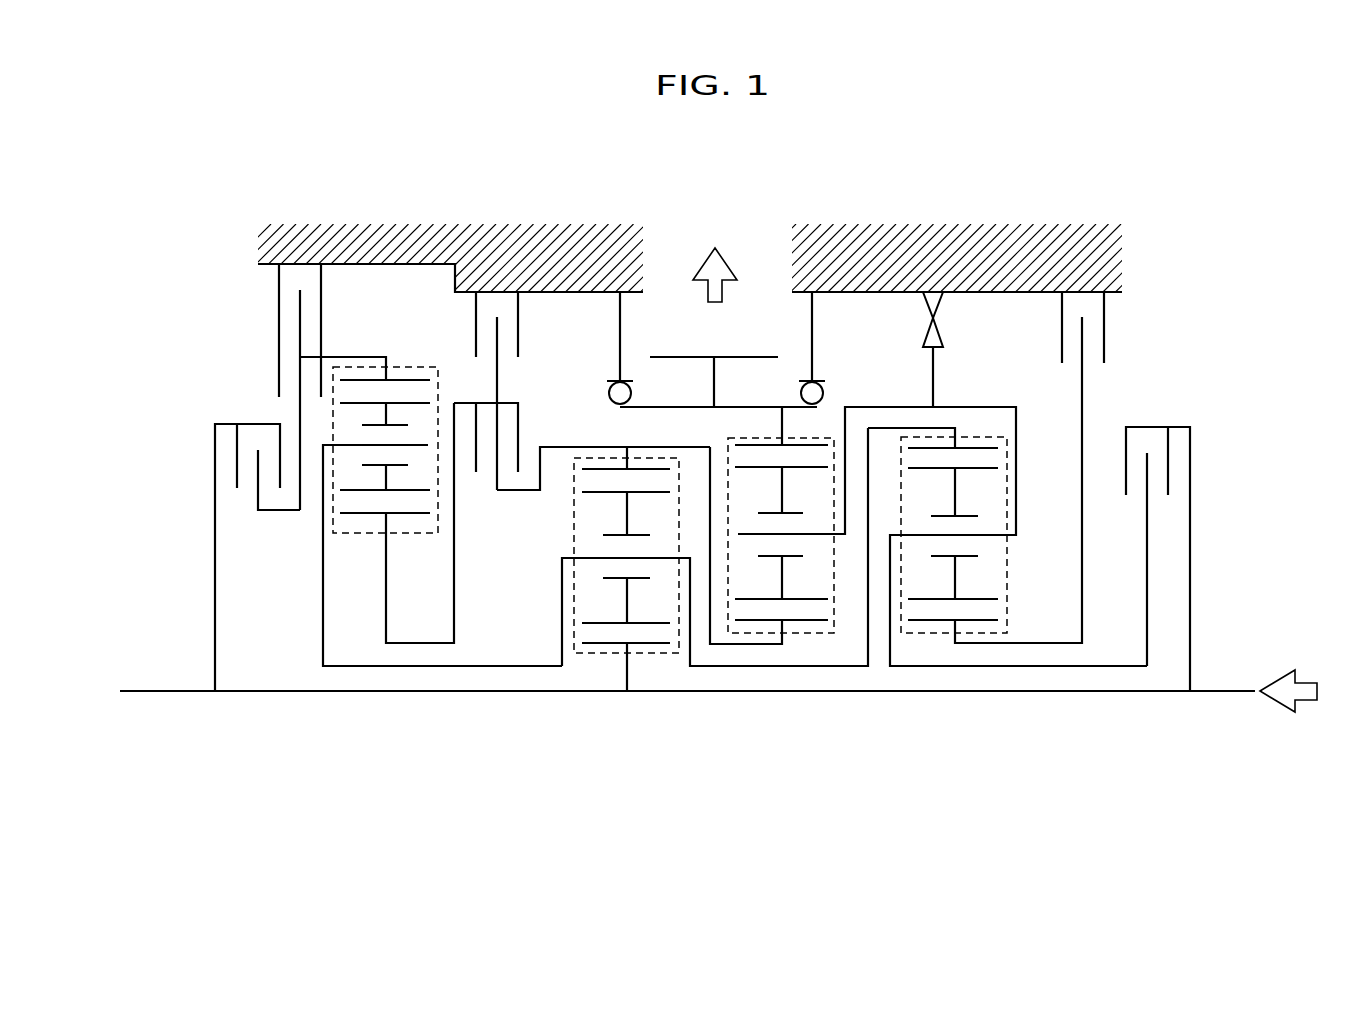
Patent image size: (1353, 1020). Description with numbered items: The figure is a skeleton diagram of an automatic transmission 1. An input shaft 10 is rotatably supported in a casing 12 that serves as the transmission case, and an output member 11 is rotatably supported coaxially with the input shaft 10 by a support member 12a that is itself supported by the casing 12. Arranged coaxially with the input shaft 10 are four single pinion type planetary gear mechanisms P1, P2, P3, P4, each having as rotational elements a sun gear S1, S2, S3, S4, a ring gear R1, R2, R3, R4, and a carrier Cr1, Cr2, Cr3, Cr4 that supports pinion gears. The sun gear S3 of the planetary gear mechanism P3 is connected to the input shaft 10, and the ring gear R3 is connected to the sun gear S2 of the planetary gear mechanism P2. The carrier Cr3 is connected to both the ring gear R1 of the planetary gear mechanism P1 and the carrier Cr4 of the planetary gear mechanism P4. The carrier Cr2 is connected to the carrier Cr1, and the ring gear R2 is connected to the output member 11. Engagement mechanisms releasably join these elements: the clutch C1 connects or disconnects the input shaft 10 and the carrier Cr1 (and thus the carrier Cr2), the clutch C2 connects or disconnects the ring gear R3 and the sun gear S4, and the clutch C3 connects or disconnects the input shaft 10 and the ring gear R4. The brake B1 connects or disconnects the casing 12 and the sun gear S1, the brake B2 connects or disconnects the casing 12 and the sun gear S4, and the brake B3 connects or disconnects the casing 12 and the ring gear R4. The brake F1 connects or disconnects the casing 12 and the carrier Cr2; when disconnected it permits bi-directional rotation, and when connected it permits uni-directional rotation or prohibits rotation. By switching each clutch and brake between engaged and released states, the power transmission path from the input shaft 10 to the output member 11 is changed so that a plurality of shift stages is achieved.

The automatic transmission 1 is at (1143, 178).
The input shaft 10 is at (1138, 693).
The output member 11 is at (720, 385).
The casing 12 is at (560, 230).
The support member 12a is at (618, 316).
The brake B1 is at (1122, 321).
The brake B2 is at (453, 309).
The brake B3 is at (252, 308).
The clutch C1 is at (1212, 450).
The clutch C2 is at (534, 412).
The clutch C3 is at (263, 535).
The brake F1 is at (960, 330).
The planetary gear mechanism P1 is at (1008, 610).
The planetary gear mechanism P2 is at (740, 635).
The planetary gear mechanism P3 is at (585, 655).
The planetary gear mechanism P4 is at (343, 535).
The ring gear R1 is at (983, 446).
The ring gear R2 is at (815, 445).
The ring gear R3 is at (600, 468).
The ring gear R4 is at (352, 378).
The carrier Cr1 is at (983, 536).
The carrier Cr2 is at (815, 536).
The carrier Cr3 is at (583, 556).
The carrier Cr4 is at (420, 447).
The sun gear S1 is at (980, 625).
The sun gear S2 is at (793, 625).
The sun gear S3 is at (655, 650).
The sun gear S4 is at (420, 518).